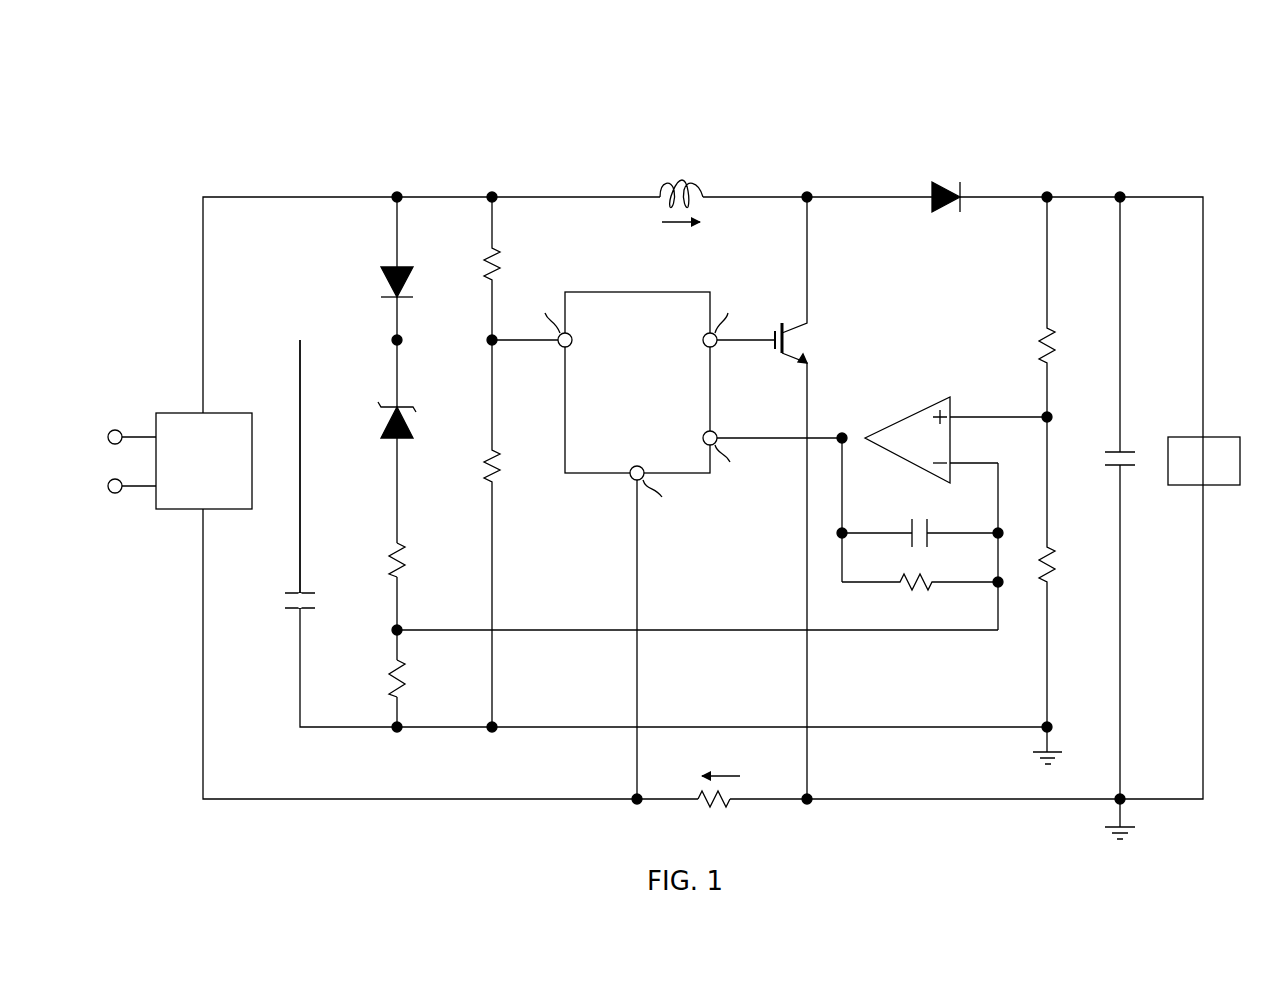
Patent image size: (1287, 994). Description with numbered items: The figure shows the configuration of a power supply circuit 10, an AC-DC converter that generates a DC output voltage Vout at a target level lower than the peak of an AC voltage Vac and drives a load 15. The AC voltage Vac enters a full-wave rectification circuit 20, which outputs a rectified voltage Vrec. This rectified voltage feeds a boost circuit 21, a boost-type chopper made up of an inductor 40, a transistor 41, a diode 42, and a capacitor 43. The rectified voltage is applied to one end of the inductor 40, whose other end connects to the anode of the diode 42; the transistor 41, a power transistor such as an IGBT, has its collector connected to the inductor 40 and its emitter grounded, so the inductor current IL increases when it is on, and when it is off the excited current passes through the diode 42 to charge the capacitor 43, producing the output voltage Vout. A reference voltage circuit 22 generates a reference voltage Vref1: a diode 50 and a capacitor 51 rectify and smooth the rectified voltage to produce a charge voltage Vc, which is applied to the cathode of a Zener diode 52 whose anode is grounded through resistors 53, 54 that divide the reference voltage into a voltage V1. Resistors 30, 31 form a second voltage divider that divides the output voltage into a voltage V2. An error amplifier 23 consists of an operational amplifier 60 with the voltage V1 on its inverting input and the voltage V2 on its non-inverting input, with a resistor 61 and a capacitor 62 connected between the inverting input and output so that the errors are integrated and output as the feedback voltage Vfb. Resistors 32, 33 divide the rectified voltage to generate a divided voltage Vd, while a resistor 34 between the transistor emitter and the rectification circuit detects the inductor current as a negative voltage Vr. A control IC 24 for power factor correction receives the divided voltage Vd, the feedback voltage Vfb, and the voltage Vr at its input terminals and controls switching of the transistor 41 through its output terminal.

The power supply circuit 10 is at (1052, 122).
The load 15 is at (1225, 437).
The full-wave rectification circuit 20 is at (160, 412).
The boost circuit 21 is at (650, 130).
The reference voltage circuit 22 is at (305, 290).
The error amplifier 23 is at (885, 372).
The control IC 24 is at (607, 291).
The resistor 30 is at (1054, 331).
The resistor 31 is at (1054, 551).
The resistor 32 is at (500, 258).
The resistor 33 is at (500, 456).
The resistor 34 is at (697, 805).
The inductor 40 is at (697, 184).
The transistor 41 is at (790, 358).
The diode 42 is at (940, 184).
The capacitor 43 is at (1133, 450).
The diode 50 is at (410, 268).
The capacitor 51 is at (290, 594).
The Zener diode 52 is at (385, 444).
The resistor 53 is at (406, 550).
The resistor 54 is at (390, 662).
The operational amplifier 60 is at (955, 397).
The resistor 61 is at (935, 580).
The capacitor 62 is at (932, 531).